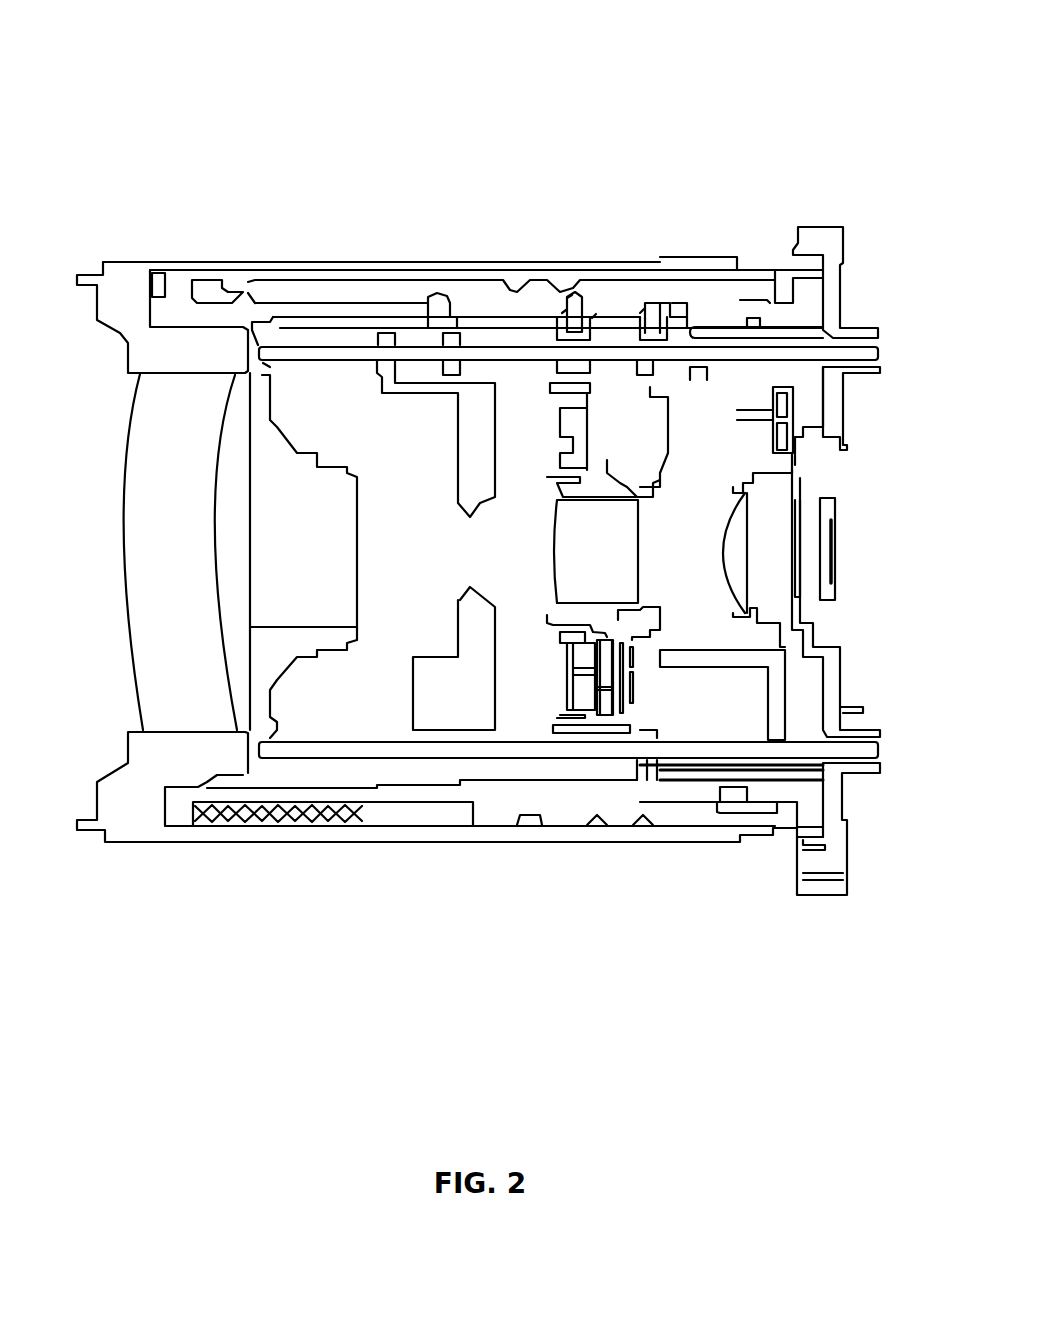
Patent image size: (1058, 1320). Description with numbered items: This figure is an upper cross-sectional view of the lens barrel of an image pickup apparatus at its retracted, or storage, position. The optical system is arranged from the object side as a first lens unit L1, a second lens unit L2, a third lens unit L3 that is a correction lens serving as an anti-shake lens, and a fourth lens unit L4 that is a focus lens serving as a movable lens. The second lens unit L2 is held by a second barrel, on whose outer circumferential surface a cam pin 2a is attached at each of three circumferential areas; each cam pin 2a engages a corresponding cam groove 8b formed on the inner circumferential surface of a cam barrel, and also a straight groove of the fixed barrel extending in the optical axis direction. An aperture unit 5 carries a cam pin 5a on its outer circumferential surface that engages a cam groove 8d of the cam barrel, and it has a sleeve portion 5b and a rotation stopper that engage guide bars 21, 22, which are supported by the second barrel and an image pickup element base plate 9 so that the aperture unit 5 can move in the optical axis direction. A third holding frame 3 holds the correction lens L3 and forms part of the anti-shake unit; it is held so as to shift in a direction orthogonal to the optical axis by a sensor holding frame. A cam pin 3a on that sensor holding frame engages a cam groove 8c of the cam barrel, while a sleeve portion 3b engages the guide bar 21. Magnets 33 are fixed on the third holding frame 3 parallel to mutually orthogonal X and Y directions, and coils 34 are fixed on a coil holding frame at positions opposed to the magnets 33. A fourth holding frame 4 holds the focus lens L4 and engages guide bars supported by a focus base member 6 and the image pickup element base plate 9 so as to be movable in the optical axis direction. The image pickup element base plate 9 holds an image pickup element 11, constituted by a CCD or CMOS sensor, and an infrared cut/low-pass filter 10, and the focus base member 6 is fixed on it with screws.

The cam pin 2a is at (447, 302).
The guide bar 21 is at (303, 350).
The guide bar 22 is at (305, 752).
The cam groove 8b is at (438, 310).
The sleeve portion 5b is at (578, 305).
The sleeve portion 3b is at (667, 337).
The cam groove 8d is at (567, 298).
The cam pin 5a is at (562, 313).
The cam groove 8c is at (592, 318).
The cam pin 3a is at (640, 313).
The first lens unit L1 is at (150, 517).
The second lens unit L2 is at (345, 530).
The third lens unit L3 is at (572, 550).
The fourth lens unit L4 is at (735, 550).
The aperture unit 5 is at (437, 720).
The third holding frame 3 is at (603, 483).
The magnet 33 is at (607, 675).
The coil 34 is at (587, 700).
The fourth holding frame 4 is at (770, 468).
The image pickup element base plate 9 is at (840, 410).
The infrared cut/low-pass filter 10 is at (803, 595).
The image pickup element 11 is at (835, 598).
The focus base member 6 is at (777, 703).